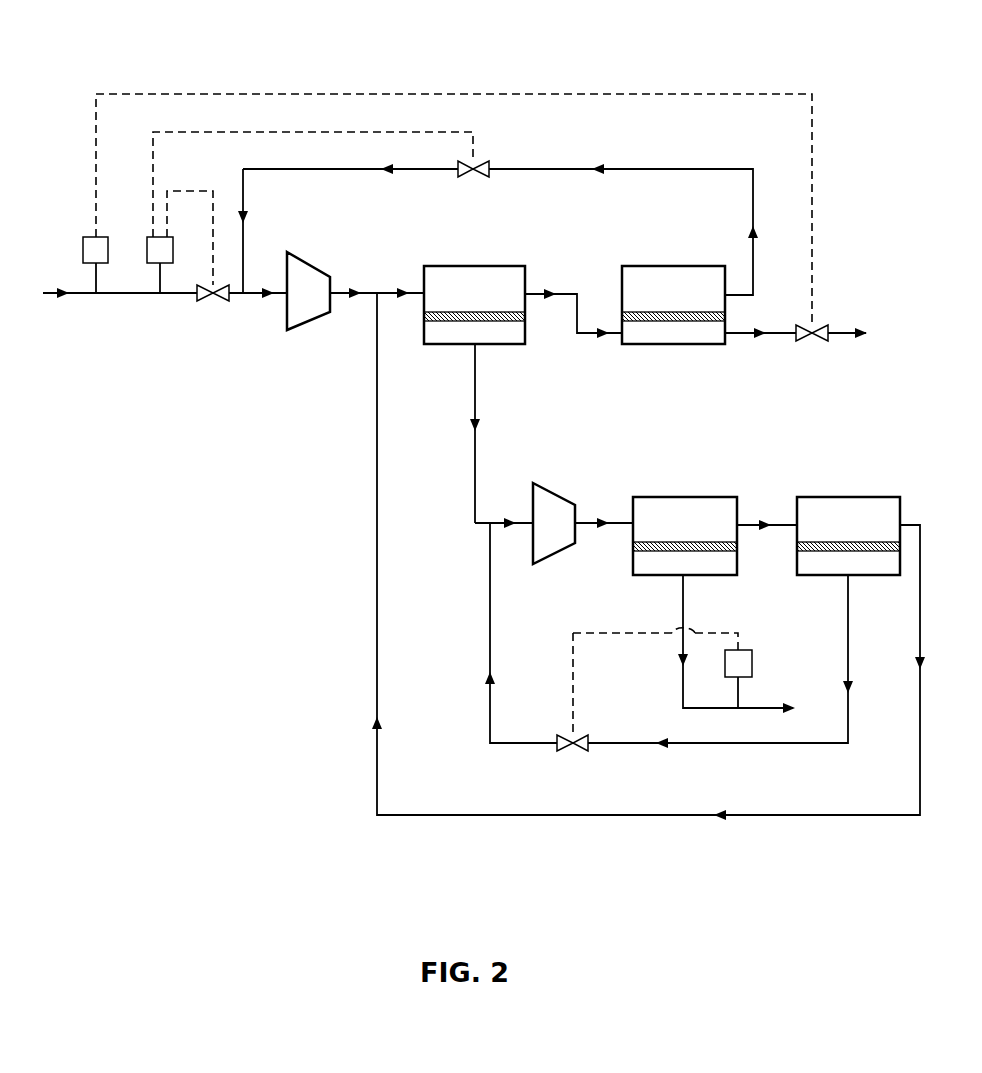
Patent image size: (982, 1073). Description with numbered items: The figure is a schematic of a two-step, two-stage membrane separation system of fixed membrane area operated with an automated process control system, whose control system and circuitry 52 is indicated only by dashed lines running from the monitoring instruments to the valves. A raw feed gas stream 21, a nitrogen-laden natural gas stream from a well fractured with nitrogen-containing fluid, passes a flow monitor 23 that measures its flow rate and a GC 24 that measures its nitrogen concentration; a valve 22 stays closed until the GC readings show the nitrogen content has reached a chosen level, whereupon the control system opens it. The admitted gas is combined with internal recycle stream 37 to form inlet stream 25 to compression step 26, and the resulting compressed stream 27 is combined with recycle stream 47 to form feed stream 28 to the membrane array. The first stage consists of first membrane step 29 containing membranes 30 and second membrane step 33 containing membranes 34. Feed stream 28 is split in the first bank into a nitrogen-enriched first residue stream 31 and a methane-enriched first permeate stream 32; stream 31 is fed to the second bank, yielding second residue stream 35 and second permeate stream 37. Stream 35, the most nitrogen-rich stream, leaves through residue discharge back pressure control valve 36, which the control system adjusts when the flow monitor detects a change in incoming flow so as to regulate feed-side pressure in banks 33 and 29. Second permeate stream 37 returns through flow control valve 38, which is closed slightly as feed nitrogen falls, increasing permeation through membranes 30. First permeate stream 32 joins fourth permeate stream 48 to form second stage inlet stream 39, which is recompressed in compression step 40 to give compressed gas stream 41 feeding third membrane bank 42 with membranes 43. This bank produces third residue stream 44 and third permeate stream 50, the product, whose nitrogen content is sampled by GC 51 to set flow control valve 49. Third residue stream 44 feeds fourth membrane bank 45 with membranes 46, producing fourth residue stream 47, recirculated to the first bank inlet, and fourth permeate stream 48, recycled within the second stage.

The raw feed gas stream 21 is at (120, 304).
The valve 22 is at (210, 301).
The flow monitor 23 is at (83, 240).
The GC 24 is at (147, 240).
The inlet stream 25 is at (258, 244).
The compression step 26 is at (303, 329).
The compressed stream 27 is at (377, 284).
The feed stream 28 is at (402, 284).
The first membrane step 29 is at (457, 266).
The membranes 30 is at (425, 317).
The first residue stream 31 is at (573, 313).
The first permeate stream 32 is at (490, 433).
The second membrane step 33 is at (654, 267).
The membranes 34 is at (622, 316).
The second residue stream 35 is at (796, 345).
The residue discharge back pressure control valve 36 is at (815, 342).
The second permeate stream 37 is at (500, 220).
The flow control valve 38 is at (486, 175).
The second stage inlet stream 39 is at (504, 513).
The compression step 40 is at (565, 496).
The compressed gas stream 41 is at (604, 513).
The third membrane bank 42 is at (704, 497).
The membranes 43 is at (634, 547).
The third residue stream 44 is at (767, 515).
The fourth membrane bank 45 is at (868, 497).
The membranes 46 is at (797, 548).
The fourth residue stream 47 is at (661, 556).
The fourth permeate stream 48 is at (669, 645).
The flow control valve 49 is at (575, 751).
The third permeate stream 50 is at (723, 644).
The GC 51 is at (752, 666).
The control system and circuitry 52 is at (755, 75).